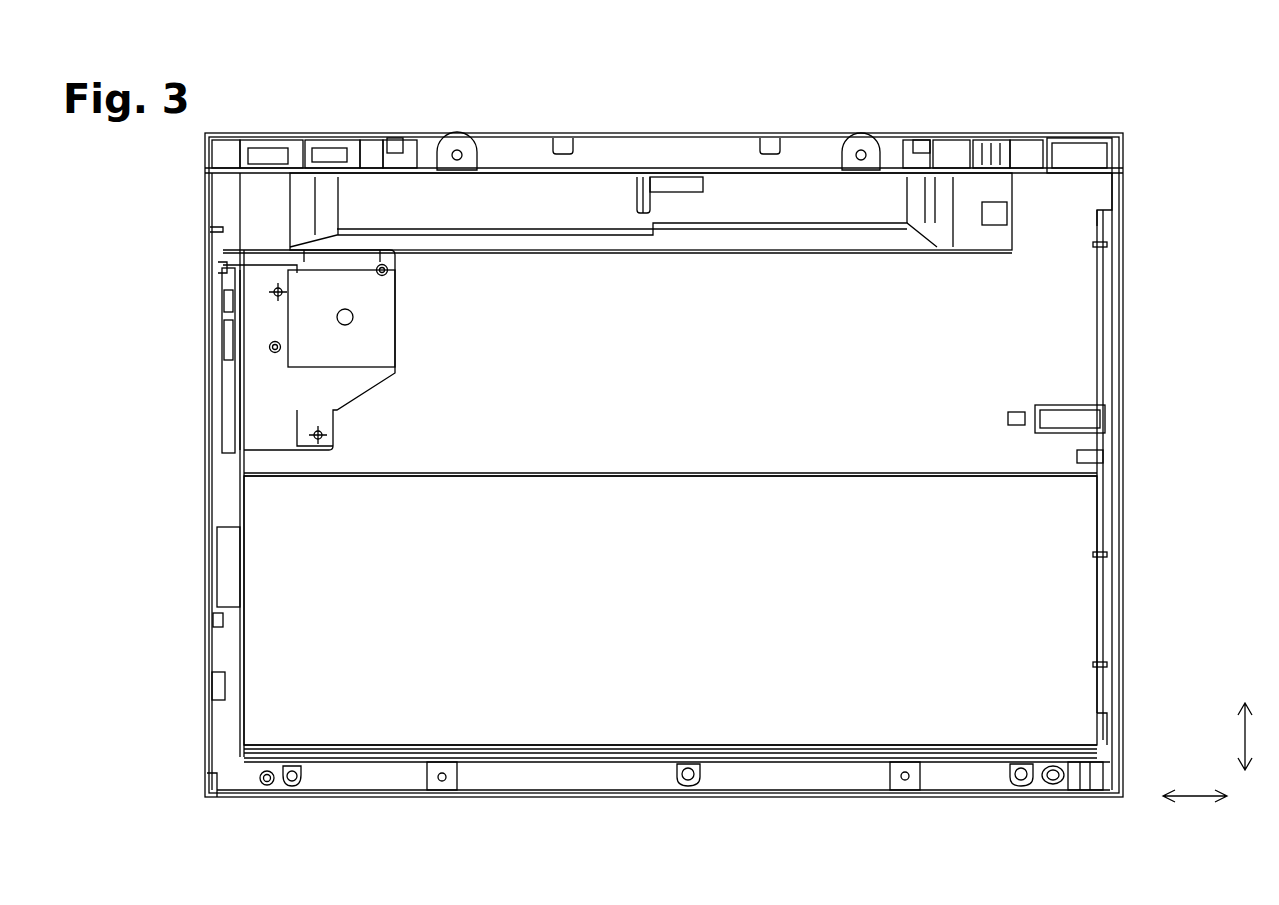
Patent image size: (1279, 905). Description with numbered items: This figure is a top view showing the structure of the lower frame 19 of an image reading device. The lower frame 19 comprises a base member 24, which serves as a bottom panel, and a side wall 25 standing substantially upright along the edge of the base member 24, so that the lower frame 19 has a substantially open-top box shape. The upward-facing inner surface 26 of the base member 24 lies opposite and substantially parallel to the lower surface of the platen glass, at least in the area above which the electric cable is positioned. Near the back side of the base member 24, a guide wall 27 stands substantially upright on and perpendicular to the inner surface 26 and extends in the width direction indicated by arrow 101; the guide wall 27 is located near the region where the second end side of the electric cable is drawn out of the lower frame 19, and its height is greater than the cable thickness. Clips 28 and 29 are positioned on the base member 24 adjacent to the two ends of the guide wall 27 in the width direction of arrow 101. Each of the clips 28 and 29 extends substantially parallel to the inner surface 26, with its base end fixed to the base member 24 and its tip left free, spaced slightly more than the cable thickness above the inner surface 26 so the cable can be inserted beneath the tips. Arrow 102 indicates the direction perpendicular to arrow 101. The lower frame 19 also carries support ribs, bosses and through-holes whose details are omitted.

The lower frame 19 is at (178, 741).
The base member 24 is at (446, 636).
The side wall 25 is at (1124, 597).
The inner surface 26 is at (412, 212).
The guide wall 27 is at (843, 216).
The clip 28 is at (625, 192).
The clip 29 is at (1000, 175).
The arrow 101 is at (1197, 798).
The arrow 102 is at (1244, 740).